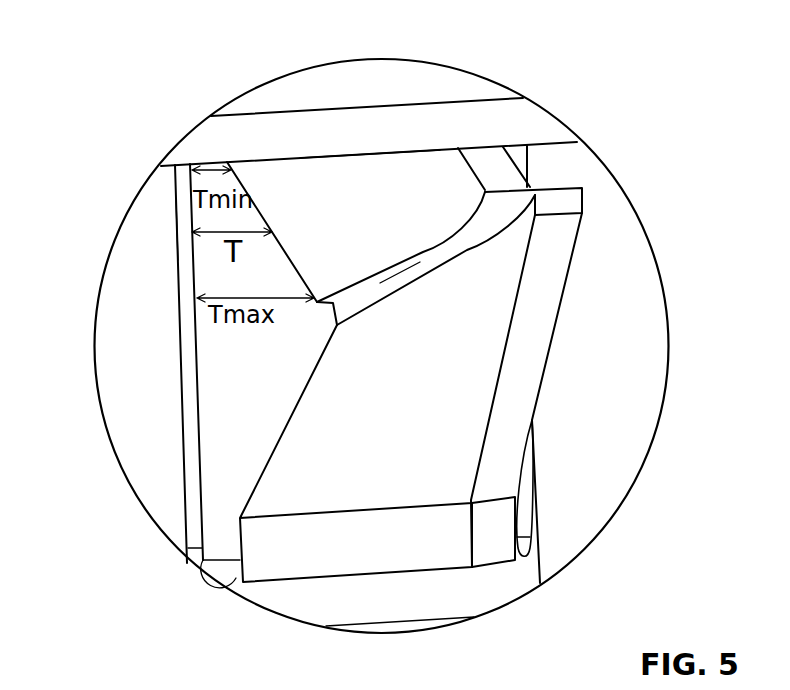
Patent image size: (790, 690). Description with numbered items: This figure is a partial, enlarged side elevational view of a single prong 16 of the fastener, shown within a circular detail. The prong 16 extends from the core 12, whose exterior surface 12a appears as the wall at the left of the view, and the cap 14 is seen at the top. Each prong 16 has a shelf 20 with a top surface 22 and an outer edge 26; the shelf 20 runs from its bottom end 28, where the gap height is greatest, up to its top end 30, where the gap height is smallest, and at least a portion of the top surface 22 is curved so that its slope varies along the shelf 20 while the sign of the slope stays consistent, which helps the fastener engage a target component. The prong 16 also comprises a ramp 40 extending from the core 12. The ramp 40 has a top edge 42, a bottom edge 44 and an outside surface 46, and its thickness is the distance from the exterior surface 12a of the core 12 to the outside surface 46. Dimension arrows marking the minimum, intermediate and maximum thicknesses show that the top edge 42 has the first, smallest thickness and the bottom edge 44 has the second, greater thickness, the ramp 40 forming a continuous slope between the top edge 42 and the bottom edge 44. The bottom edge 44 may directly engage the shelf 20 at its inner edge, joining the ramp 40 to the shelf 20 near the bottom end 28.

The core 12 is at (123, 278).
The exterior surface 12a is at (180, 237).
The cap 14 is at (330, 215).
The prong 16 is at (408, 340).
The shelf 20 is at (425, 278).
The top surface 22 is at (483, 233).
The outer edge 26 is at (363, 303).
The bottom end 28 is at (313, 307).
The top end 30 is at (533, 185).
The ramp 40 is at (217, 268).
The top edge 42 is at (343, 152).
The bottom edge 44 is at (423, 240).
The outside surface 46 is at (297, 137).